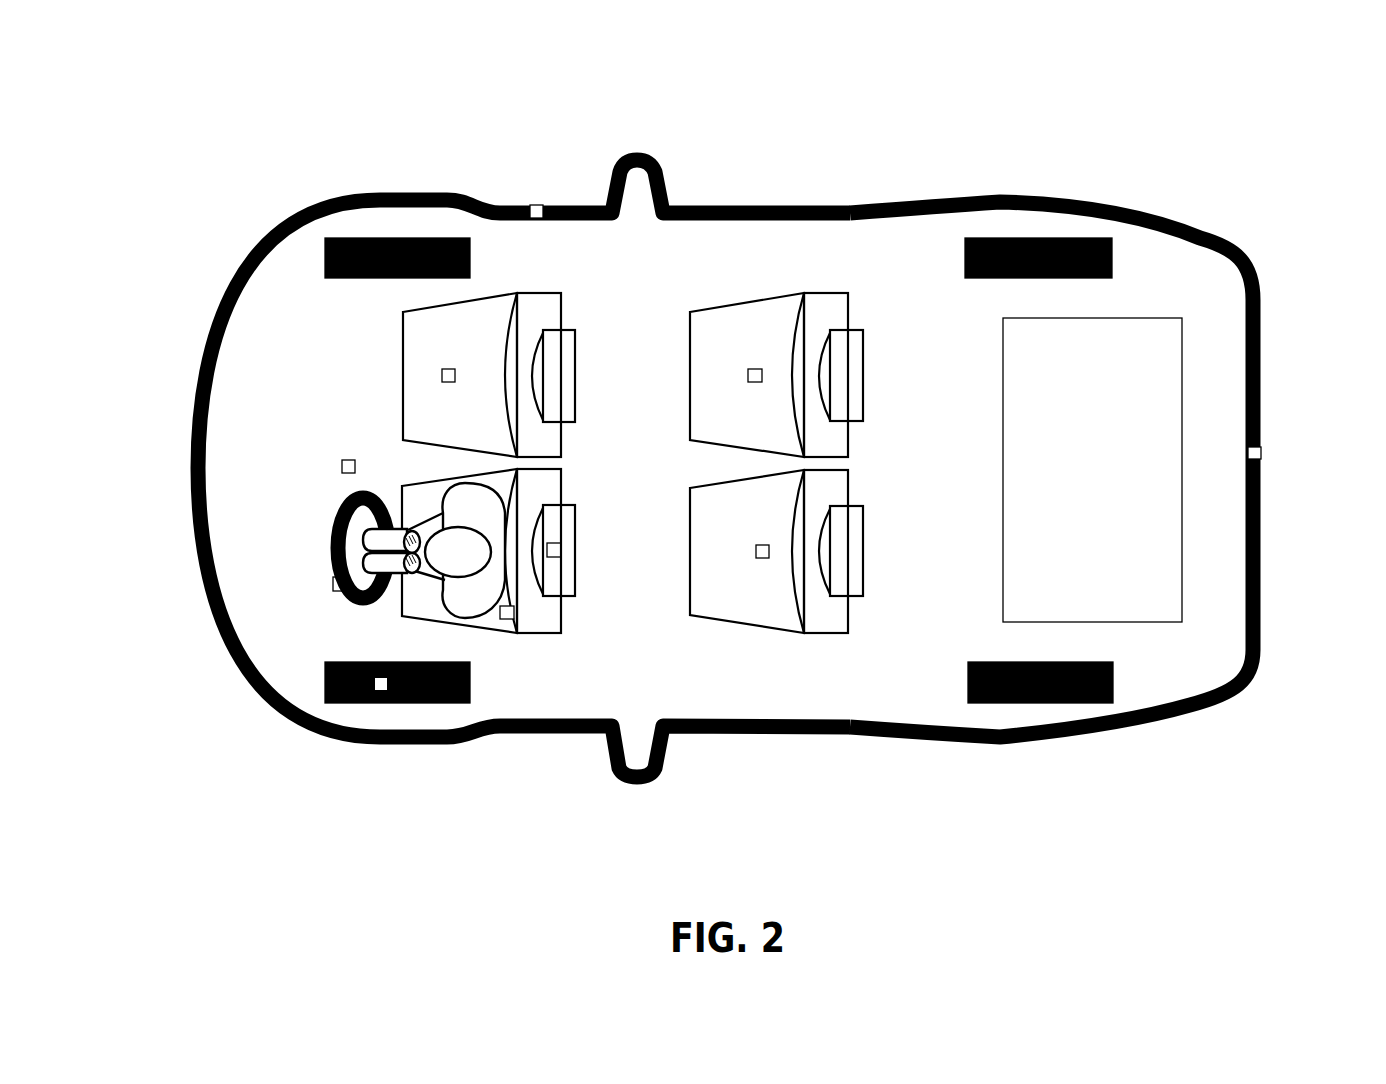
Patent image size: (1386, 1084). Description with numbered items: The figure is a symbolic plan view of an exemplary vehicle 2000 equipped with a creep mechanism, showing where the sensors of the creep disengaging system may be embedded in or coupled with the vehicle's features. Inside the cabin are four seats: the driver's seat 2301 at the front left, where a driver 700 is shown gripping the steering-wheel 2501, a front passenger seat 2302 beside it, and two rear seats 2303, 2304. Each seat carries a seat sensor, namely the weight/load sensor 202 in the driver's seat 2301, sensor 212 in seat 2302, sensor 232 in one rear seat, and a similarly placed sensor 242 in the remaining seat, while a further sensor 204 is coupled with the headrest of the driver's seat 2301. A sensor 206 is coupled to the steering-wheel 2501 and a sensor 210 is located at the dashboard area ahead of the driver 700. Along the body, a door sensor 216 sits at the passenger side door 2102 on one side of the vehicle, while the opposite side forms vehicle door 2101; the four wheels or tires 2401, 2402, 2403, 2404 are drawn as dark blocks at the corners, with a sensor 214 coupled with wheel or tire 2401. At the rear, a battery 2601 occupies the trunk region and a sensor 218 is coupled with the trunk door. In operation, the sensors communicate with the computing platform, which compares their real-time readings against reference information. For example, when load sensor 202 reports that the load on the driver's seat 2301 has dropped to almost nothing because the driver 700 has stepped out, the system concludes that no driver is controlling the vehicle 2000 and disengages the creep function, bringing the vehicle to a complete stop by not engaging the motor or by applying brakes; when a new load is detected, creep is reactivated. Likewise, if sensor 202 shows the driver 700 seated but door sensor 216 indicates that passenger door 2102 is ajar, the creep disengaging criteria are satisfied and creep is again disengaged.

The vehicle 2000 is at (782, 196).
The vehicle door 2101 is at (582, 735).
The passenger side door 2102 is at (568, 205).
The vehicle wheel or tire 2401 is at (430, 688).
The vehicle wheel or tire 2402 is at (417, 253).
The vehicle wheel or tire 2403 is at (1047, 683).
The vehicle wheel or tire 2404 is at (1067, 248).
The driver's seat 2301 is at (562, 622).
The vehicle seat 2302 is at (562, 450).
The vehicle seat 2303 is at (850, 620).
The vehicle seat 2304 is at (850, 440).
The steering-wheel 2501 is at (342, 504).
The battery 2601 is at (1158, 358).
The driver 700 is at (463, 518).
The load sensor 202 is at (505, 620).
The sensor 204 is at (558, 550).
The sensor 206 is at (333, 583).
The sensor 210 is at (340, 461).
The sensor 212 is at (445, 372).
The sensor 214 is at (374, 692).
The door sensor 216 is at (530, 210).
The sensor 218 is at (1262, 452).
The sensor 232 is at (758, 546).
The sensor 242 is at (750, 369).